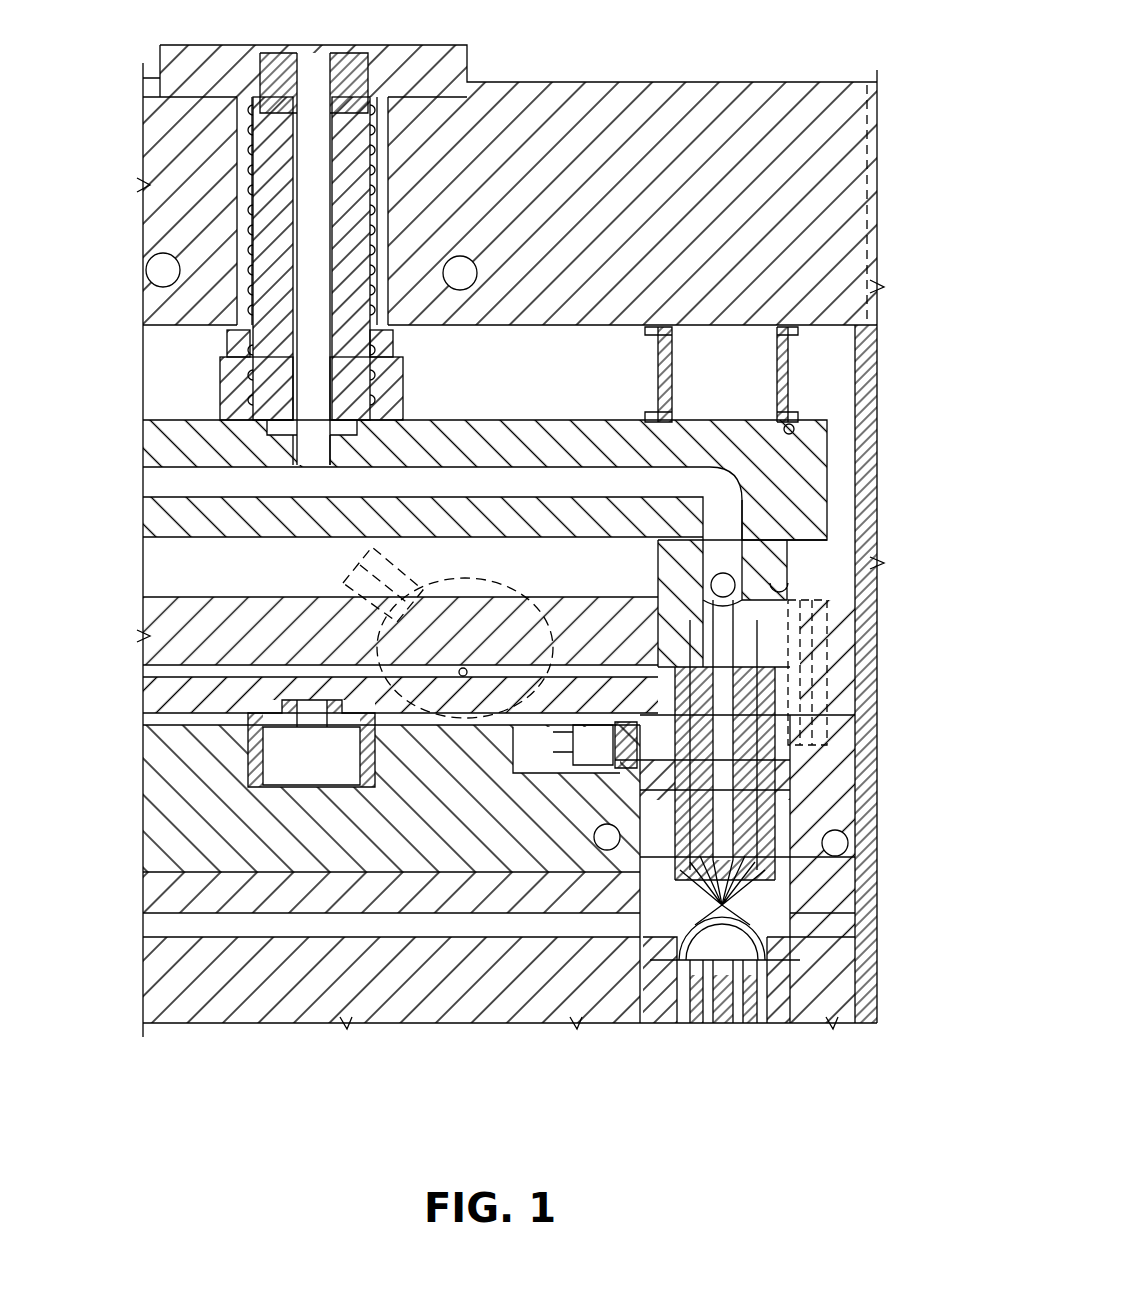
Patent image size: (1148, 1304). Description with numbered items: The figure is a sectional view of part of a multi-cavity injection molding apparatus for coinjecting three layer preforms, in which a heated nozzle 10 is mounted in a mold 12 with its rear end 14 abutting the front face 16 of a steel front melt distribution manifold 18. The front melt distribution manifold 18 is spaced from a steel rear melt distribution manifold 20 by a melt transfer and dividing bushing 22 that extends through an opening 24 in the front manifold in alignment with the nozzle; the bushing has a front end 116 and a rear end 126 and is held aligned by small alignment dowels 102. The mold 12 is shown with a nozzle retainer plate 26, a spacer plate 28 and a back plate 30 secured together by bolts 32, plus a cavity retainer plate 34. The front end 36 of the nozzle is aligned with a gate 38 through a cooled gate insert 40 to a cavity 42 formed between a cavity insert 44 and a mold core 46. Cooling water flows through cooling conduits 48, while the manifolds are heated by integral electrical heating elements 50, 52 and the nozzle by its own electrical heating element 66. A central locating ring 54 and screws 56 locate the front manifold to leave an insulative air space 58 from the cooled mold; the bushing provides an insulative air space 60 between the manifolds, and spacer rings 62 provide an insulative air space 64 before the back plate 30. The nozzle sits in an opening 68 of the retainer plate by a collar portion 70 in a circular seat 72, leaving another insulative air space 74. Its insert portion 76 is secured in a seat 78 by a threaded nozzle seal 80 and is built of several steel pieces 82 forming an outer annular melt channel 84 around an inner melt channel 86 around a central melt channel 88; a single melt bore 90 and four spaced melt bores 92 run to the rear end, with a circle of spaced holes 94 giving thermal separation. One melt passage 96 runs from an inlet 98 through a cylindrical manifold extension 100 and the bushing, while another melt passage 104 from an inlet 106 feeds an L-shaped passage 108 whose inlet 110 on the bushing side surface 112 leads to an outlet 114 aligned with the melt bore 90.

The heated nozzle 10 is at (790, 762).
The mold 12 is at (180, 806).
The rear end 14 is at (770, 690).
The front face 16 is at (250, 712).
The front melt distribution manifold 18 is at (160, 648).
The rear melt distribution manifold 20 is at (170, 443).
The melt transfer and dividing bushing 22 is at (777, 560).
The opening 24 is at (780, 590).
The nozzle retainer plate 26 is at (155, 843).
The spacer plate 28 is at (865, 390).
The back plate 30 is at (701, 122).
The bolts 32 is at (880, 180).
The cavity retainer plate 34 is at (222, 1003).
The front end 36 is at (790, 935).
The gate 38 is at (790, 960).
The cooled gate insert 40 is at (662, 1005).
The cavity 42 is at (700, 1005).
The cavity insert 44 is at (780, 1005).
The mold core 46 is at (745, 1005).
The cooling conduits 48 is at (147, 270).
The electrical heating element 50 is at (810, 610).
The electrical heating element 52 is at (795, 429).
The central locating ring 54 is at (247, 767).
The screws 56 is at (830, 619).
The insulative air space 58 is at (459, 672).
The insulative air space 60 is at (163, 548).
The spacer rings 62 is at (790, 363).
The insulative air space 64 is at (582, 355).
The electrical heating element 66 is at (665, 830).
The opening 68 is at (560, 745).
The collar portion 70 is at (655, 800).
The circular seat 72 is at (600, 762).
The insulative air space 74 is at (835, 823).
The insert portion 76 is at (790, 800).
The seat 78 is at (830, 830).
The threaded nozzle seal 80 is at (775, 905).
The steel pieces 82 is at (820, 850).
The outer annular melt channel 84 is at (790, 870).
The inner melt channel 86 is at (790, 843).
The central melt channel 88 is at (800, 880).
The melt bore 90 is at (778, 722).
The melt bores 92 is at (780, 740).
The spaced holes 94 is at (775, 710).
The melt passage 96 is at (718, 483).
The inlet 98 is at (313, 75).
The cylindrical manifold extension 100 is at (280, 198).
The alignment dowels 102 is at (465, 690).
The melt passage 104 is at (657, 600).
The inlet 106 is at (520, 735).
The L-shaped passage 108 is at (740, 652).
The inlet 110 is at (658, 560).
The side surface 112 is at (163, 513).
The outlet 114 is at (765, 672).
The front end 116 is at (500, 760).
The rear end 126 is at (762, 540).